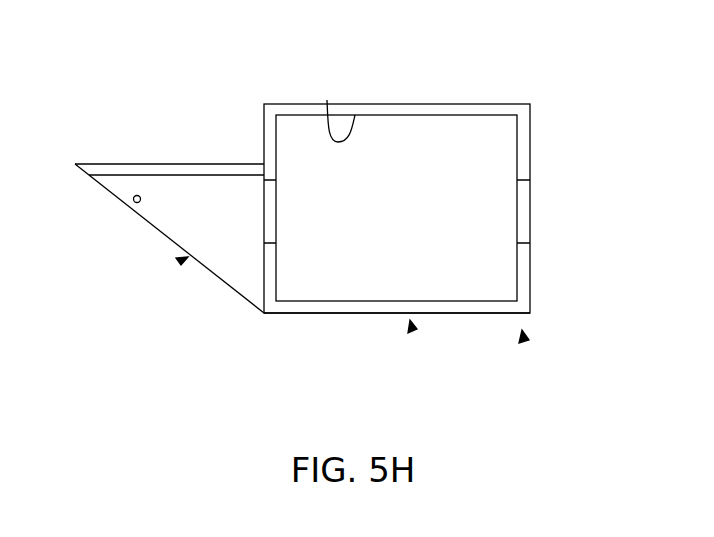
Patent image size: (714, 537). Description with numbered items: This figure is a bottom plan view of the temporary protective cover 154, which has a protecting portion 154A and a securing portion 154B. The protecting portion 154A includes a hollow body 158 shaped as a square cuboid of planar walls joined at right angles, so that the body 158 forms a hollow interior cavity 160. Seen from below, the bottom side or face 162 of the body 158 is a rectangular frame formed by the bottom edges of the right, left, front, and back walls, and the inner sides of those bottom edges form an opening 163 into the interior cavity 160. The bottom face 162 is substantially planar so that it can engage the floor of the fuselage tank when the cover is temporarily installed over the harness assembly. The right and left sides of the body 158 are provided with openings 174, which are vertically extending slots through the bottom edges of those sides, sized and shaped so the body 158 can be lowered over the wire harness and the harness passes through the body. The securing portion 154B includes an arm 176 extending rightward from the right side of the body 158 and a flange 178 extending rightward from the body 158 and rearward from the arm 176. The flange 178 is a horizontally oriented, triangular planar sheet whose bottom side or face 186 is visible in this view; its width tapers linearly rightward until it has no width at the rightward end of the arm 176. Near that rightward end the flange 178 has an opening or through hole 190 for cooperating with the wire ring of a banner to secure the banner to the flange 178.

The temporary protective cover 154 is at (524, 340).
The protecting portion 154A is at (412, 330).
The securing portion 154B is at (180, 262).
The body 158 is at (317, 315).
The interior cavity 160 is at (396, 208).
The bottom side or face 162 is at (433, 110).
The opening 163 is at (327, 100).
The openings 174 is at (525, 197).
The arm 176 is at (160, 163).
The flange 178 is at (152, 227).
The bottom side or face of the flange 186 is at (176, 200).
The opening or through hole 190 is at (123, 197).